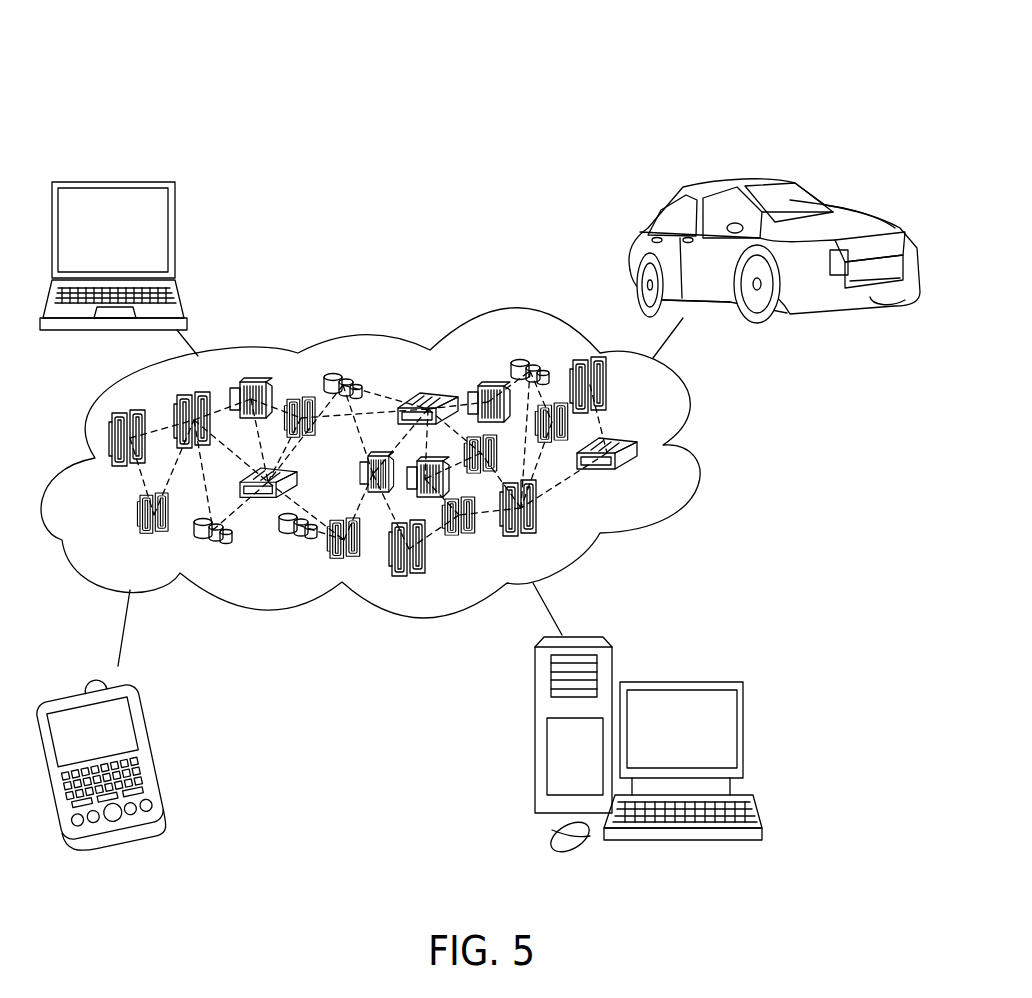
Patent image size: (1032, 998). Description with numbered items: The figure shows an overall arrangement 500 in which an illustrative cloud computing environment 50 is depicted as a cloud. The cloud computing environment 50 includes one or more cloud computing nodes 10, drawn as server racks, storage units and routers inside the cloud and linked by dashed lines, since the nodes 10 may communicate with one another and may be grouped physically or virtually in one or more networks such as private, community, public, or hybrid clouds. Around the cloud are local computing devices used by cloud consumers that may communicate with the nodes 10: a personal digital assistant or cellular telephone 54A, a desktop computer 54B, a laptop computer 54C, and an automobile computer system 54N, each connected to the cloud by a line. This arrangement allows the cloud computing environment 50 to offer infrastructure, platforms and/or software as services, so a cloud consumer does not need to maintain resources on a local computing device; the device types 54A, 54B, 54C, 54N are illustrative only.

The cloud computing environment system 500 is at (728, 102).
The cloud computing environment 50 is at (398, 463).
The cloud computing nodes 10 is at (650, 489).
The personal digital assistant or cellular telephone 54A is at (147, 728).
The desktop computer 54B is at (743, 728).
The laptop computer 54C is at (175, 232).
The automobile computer system 54N is at (810, 202).